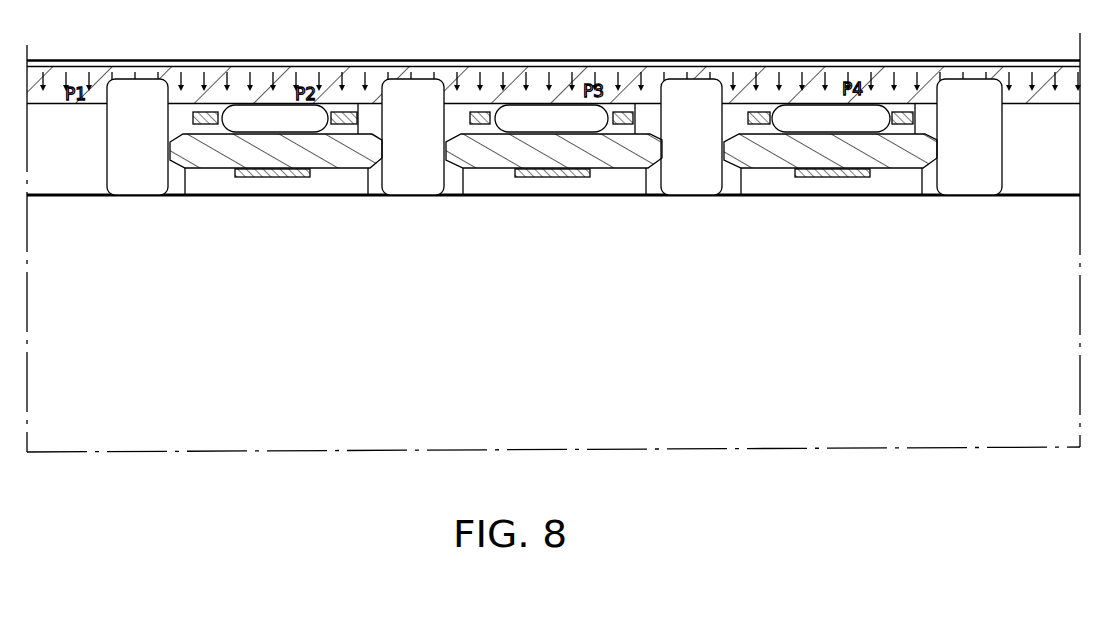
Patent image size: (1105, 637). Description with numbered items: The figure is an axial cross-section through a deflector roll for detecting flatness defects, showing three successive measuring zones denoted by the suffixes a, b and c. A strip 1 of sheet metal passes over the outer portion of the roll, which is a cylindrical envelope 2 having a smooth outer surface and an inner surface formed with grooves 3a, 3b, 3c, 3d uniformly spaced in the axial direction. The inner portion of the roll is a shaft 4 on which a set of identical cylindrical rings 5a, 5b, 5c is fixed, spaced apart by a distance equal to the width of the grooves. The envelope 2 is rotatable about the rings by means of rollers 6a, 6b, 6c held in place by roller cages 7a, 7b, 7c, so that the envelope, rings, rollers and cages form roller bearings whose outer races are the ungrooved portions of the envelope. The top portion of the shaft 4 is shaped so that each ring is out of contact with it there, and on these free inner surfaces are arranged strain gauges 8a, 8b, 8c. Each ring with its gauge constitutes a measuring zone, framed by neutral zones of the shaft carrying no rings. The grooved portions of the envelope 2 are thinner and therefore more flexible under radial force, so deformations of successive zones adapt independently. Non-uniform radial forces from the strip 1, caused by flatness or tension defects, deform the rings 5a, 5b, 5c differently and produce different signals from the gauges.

The strip 1 is at (325, 66).
The cylindrical envelope 2 is at (239, 90).
The groove 3a is at (144, 92).
The groove 3b is at (414, 84).
The groove 3c is at (698, 88).
The groove 3d is at (975, 88).
The shaft 4 is at (168, 258).
The cylindrical ring 5a is at (327, 153).
The cylindrical ring 5b is at (625, 152).
The cylindrical ring 5c is at (902, 152).
The roller 6a is at (284, 112).
The roller 6b is at (553, 115).
The roller 6c is at (832, 115).
The roller cage 7a is at (200, 112).
The roller cage 7b is at (483, 112).
The roller cage 7c is at (758, 112).
The strain gauge 8a is at (253, 179).
The strain gauge 8b is at (542, 177).
The strain gauge 8c is at (810, 177).